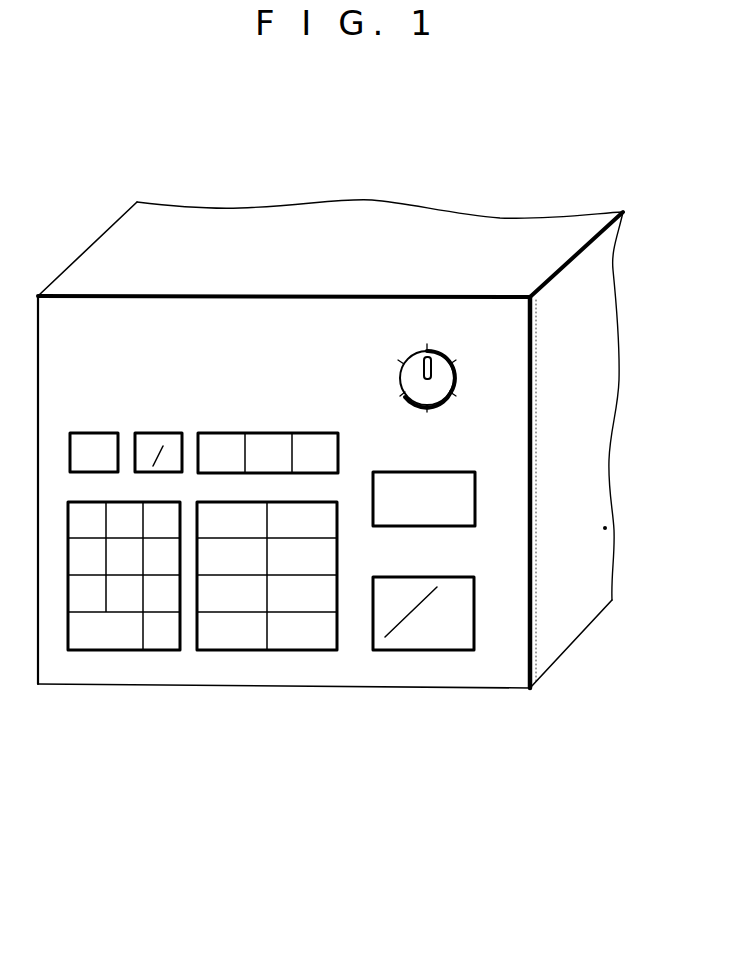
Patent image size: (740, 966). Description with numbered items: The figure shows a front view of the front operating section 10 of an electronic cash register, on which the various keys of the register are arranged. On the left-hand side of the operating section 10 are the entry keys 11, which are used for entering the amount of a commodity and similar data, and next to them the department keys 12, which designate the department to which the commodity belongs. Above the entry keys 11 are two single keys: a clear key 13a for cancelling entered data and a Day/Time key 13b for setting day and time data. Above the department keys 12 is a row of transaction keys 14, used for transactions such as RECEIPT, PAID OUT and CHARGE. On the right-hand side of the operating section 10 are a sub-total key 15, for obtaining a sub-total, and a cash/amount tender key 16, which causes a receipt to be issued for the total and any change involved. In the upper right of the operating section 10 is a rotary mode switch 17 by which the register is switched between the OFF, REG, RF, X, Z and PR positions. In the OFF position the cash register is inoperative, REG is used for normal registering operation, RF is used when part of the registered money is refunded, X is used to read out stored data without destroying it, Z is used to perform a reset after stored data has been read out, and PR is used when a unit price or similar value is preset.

The front operating section 10 is at (301, 372).
The entry keys 11 is at (180, 655).
The department keys 12 is at (337, 655).
The clear key 13a is at (93, 432).
The Day/Time key 13b is at (157, 432).
The transaction keys 14 is at (338, 428).
The sub-total key 15 is at (460, 499).
The cash/amount tender key 16 is at (470, 630).
The mode switch 17 is at (404, 378).